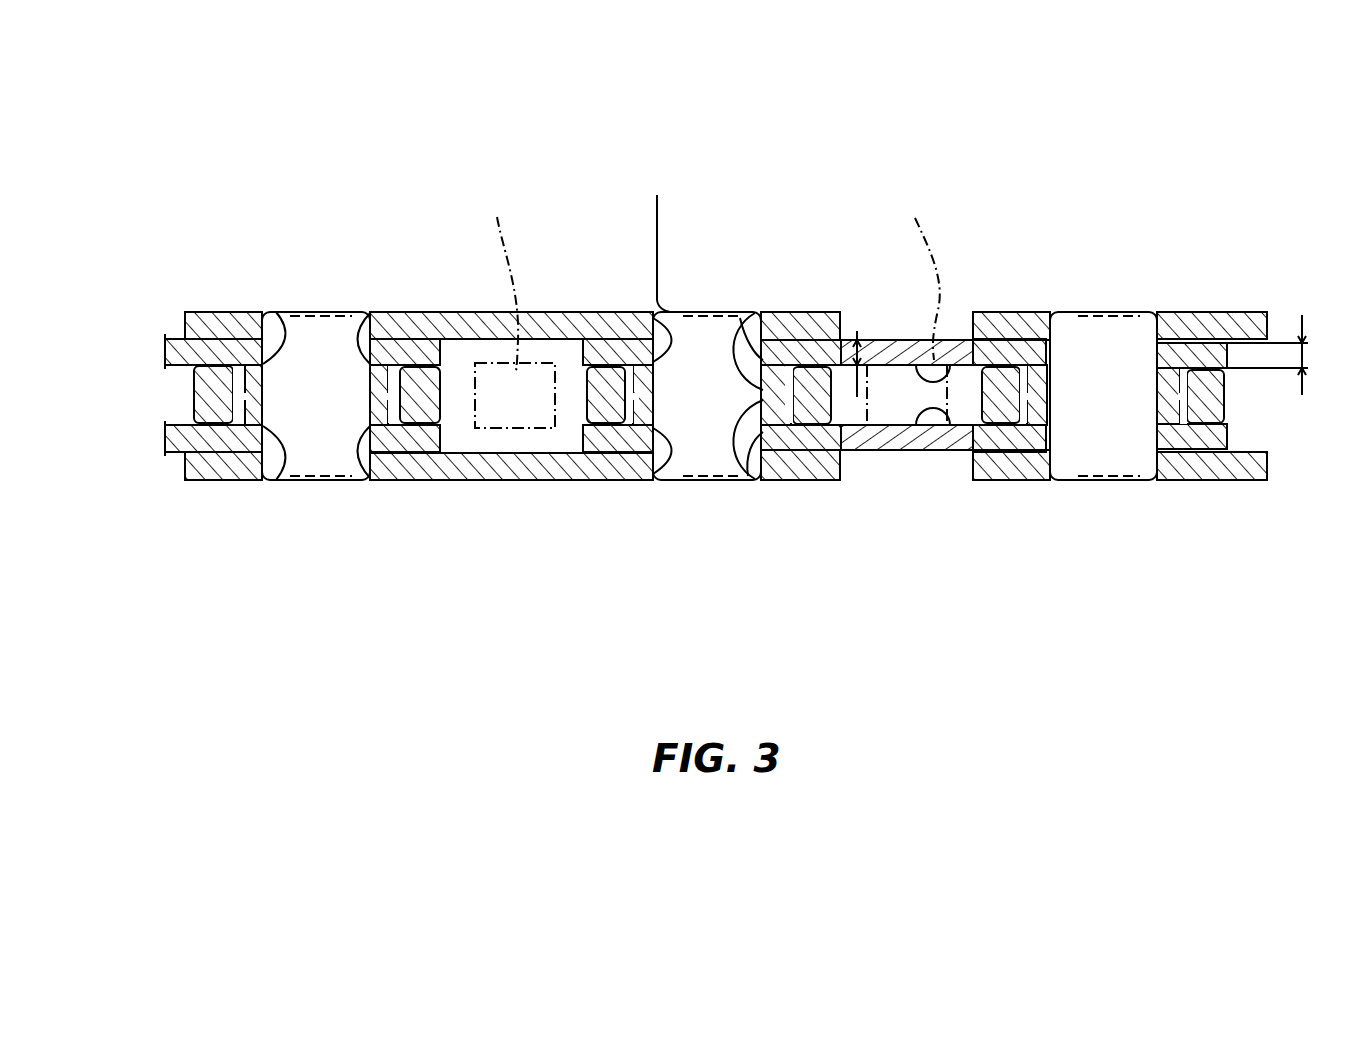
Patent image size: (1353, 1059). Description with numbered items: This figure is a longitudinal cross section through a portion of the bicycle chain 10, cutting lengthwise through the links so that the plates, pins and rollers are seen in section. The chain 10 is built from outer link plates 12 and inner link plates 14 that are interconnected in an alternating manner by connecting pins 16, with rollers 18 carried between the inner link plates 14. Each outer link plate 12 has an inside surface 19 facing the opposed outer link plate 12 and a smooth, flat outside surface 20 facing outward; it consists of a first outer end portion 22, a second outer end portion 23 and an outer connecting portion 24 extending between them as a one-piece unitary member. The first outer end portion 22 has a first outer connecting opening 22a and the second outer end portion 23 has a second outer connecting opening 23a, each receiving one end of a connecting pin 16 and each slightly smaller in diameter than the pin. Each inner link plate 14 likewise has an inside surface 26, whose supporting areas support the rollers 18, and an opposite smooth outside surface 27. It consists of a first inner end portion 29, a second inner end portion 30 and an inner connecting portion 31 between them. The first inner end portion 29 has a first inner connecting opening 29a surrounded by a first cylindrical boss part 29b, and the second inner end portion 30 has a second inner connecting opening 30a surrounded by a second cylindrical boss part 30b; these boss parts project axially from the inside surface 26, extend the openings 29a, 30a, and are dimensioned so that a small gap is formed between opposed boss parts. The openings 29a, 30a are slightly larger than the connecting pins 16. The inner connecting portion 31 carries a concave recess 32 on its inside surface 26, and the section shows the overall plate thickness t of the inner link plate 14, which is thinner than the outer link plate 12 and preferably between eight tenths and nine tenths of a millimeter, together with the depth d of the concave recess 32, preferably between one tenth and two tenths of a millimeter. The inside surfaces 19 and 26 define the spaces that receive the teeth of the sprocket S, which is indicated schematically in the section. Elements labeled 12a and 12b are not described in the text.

The bicycle chain 10 is at (771, 196).
The outer link plate 12 is at (497, 290).
The link plate portion 12a is at (1190, 480).
The link plate portion 12b is at (1155, 420).
The inner link plate 14 is at (906, 312).
The connecting pin 16 is at (290, 386).
The roller 18 is at (180, 338).
The inside surface 19 is at (370, 365).
The outside surface 20 is at (400, 312).
The first outer end portion 22 is at (211, 485).
The first outer connecting opening 22a is at (255, 312).
The second outer end portion 23 is at (795, 485).
The second outer connecting opening 23a is at (668, 312).
The outer connecting portion 24 is at (524, 505).
The inside surface 26 is at (742, 315).
The outside surface 27 is at (846, 314).
The first inner end portion 29 is at (617, 312).
The first inner connecting opening 29a is at (657, 597).
The first cylindrical boss part 29b is at (688, 312).
The second inner end portion 30 is at (248, 338).
The second inner connecting opening 30a is at (283, 312).
The second cylindrical boss part 30b is at (433, 312).
The inner connecting portion 31 is at (930, 450).
The concave recess 32 is at (953, 340).
The sprocket S is at (710, 276).
The depth of the concave recess d is at (860, 350).
The overall plate thickness t is at (1291, 311).